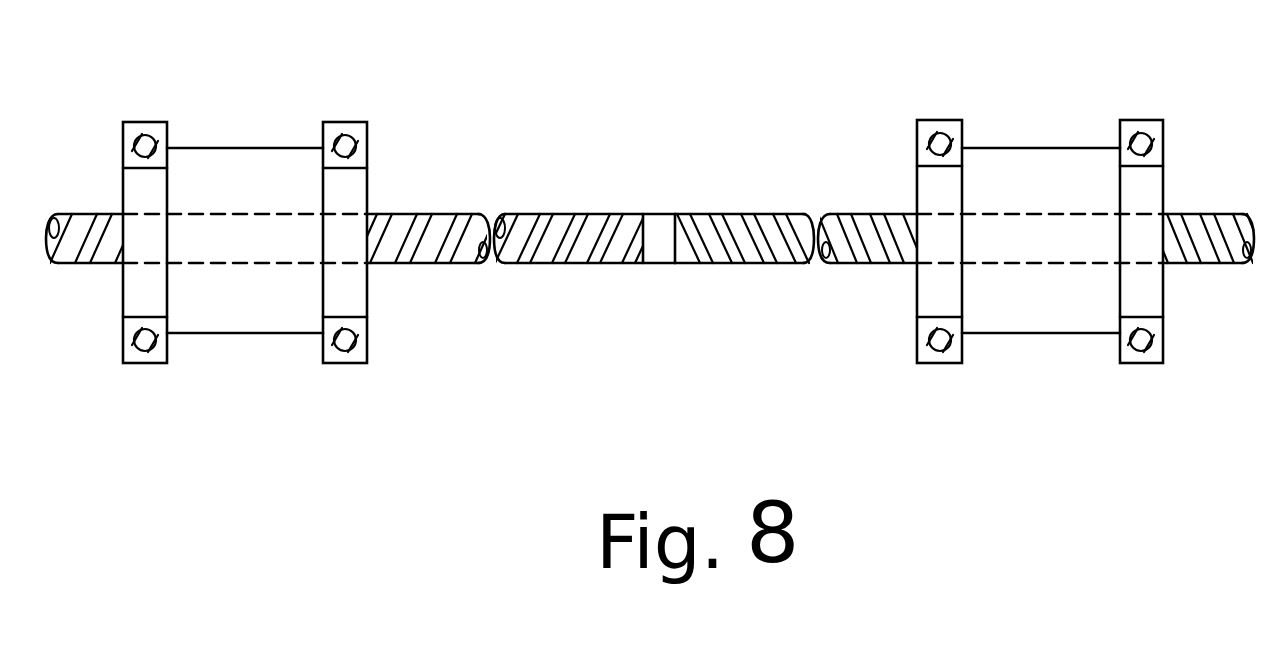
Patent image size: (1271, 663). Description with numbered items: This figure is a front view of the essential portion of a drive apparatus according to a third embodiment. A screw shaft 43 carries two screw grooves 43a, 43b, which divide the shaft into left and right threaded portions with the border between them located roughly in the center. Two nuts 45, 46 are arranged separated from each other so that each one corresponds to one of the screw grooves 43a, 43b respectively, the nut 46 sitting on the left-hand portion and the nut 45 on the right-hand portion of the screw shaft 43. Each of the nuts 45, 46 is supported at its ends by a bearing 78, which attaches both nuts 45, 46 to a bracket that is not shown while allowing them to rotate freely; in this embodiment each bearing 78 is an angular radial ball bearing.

The screw shaft 43 is at (656, 243).
The screw groove 43a is at (868, 213).
The screw groove 43b is at (553, 264).
The nut 45 is at (1037, 148).
The nut 46 is at (243, 148).
The bearing 78 is at (135, 122).